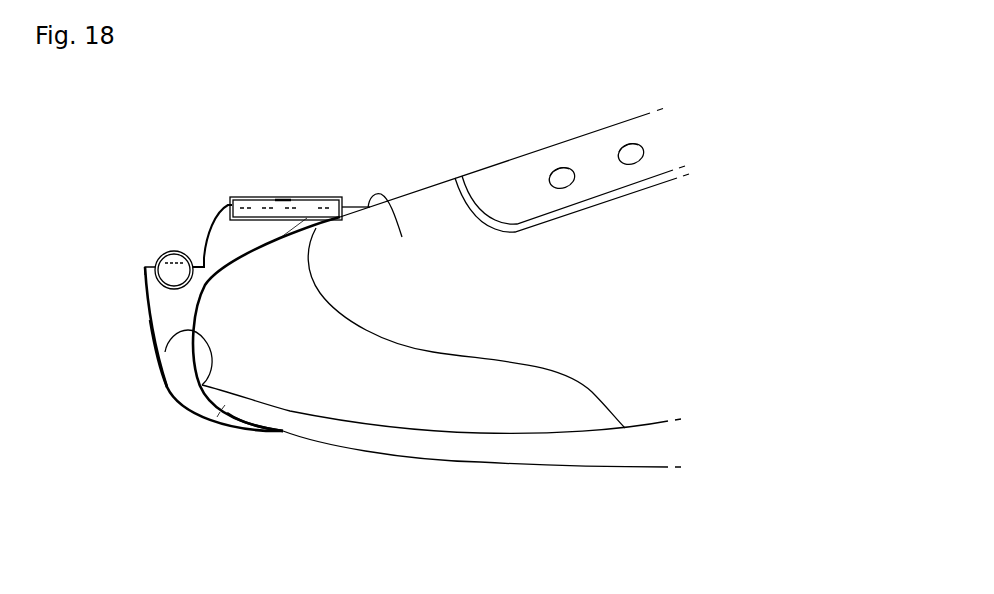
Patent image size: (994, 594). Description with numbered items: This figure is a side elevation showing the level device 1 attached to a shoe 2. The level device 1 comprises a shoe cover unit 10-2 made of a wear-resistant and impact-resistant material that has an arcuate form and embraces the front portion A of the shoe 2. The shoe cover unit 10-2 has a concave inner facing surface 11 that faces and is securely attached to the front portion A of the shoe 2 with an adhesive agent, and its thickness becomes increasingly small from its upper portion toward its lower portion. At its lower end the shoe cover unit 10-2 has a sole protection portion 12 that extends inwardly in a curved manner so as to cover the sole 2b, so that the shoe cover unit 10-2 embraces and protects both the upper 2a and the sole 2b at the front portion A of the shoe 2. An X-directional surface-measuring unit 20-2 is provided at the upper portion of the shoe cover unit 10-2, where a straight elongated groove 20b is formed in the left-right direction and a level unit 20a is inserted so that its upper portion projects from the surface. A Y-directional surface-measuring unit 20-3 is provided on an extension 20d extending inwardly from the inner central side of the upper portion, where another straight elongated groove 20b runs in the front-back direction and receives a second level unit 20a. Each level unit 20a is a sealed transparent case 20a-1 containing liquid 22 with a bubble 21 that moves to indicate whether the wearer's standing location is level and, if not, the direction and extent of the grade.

The level device 1 is at (127, 351).
The shoe 2 is at (508, 164).
The upper 2a is at (464, 430).
The sole 2b is at (385, 457).
The shoe cover unit 10-2 is at (169, 389).
The inner facing surface 11 is at (198, 387).
The sole protection portion 12 is at (225, 413).
The X-directional surface-measuring unit 20-2 is at (154, 260).
The Y-directional surface-measuring unit 20-3 is at (352, 191).
The level unit 20a is at (342, 119).
The transparent case 20a-1 is at (258, 198).
The bubble 21 is at (283, 198).
The liquid 22 is at (316, 208).
The straight elongated groove 20b is at (327, 222).
The extension 20d is at (400, 227).
The front portion A is at (165, 352).